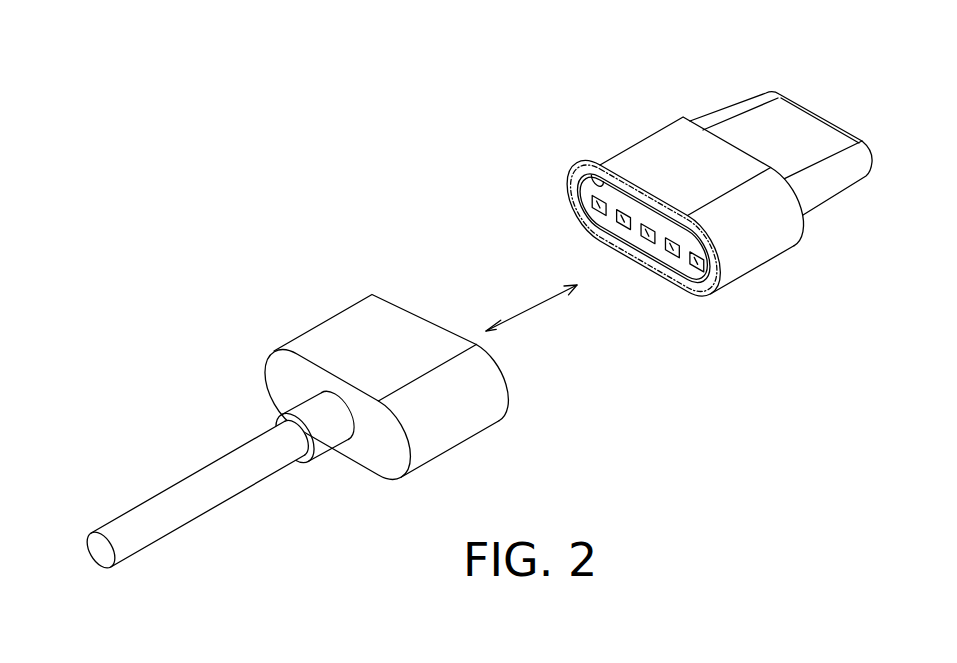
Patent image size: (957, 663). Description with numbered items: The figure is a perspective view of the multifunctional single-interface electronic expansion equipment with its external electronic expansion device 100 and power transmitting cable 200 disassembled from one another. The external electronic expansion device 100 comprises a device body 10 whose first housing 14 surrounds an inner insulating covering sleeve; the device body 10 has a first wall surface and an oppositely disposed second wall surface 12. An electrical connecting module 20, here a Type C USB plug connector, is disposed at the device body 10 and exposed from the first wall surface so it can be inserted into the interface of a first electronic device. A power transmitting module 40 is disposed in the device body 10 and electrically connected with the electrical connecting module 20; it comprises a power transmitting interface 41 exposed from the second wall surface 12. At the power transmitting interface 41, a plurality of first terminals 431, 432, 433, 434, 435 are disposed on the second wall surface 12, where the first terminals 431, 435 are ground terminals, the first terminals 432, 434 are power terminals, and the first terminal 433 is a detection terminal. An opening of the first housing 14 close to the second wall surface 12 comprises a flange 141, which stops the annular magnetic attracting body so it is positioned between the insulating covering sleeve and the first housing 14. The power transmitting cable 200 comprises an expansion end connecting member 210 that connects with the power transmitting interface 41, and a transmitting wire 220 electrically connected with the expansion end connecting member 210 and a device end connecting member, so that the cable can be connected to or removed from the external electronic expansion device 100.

The external electronic expansion device 100 is at (817, 298).
The device body 10 is at (760, 258).
The second wall surface 12 is at (699, 281).
The first housing 14 is at (634, 140).
The flange 141 is at (584, 191).
The electrical connecting module 20 is at (840, 183).
The power transmitting module 40 is at (505, 113).
The power transmitting interface 41 is at (598, 193).
The first terminal 431 is at (594, 208).
The first terminal 432 is at (619, 223).
The first terminal 433 is at (645, 237).
The first terminal 434 is at (667, 254).
The first terminal 435 is at (694, 270).
The power transmitting cable 200 is at (222, 322).
The expansion end connecting member 210 is at (318, 325).
The transmitting wire 220 is at (208, 465).